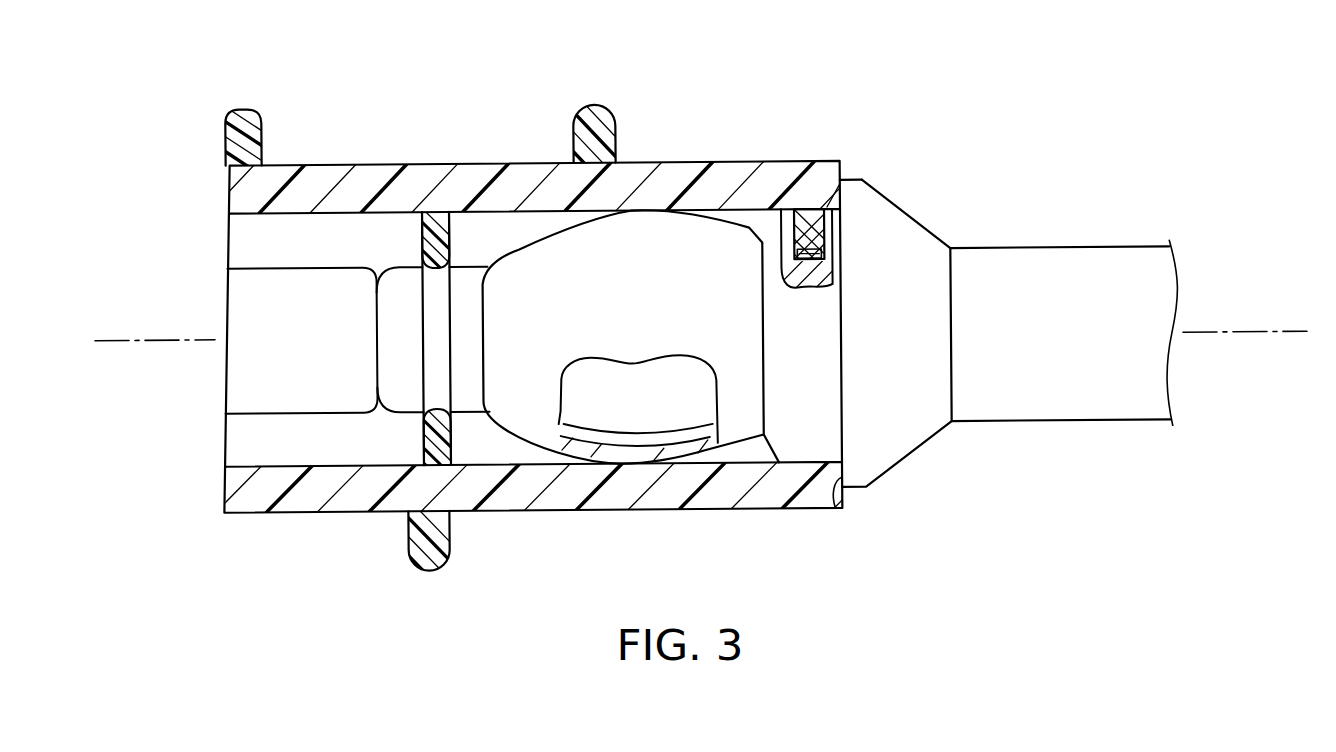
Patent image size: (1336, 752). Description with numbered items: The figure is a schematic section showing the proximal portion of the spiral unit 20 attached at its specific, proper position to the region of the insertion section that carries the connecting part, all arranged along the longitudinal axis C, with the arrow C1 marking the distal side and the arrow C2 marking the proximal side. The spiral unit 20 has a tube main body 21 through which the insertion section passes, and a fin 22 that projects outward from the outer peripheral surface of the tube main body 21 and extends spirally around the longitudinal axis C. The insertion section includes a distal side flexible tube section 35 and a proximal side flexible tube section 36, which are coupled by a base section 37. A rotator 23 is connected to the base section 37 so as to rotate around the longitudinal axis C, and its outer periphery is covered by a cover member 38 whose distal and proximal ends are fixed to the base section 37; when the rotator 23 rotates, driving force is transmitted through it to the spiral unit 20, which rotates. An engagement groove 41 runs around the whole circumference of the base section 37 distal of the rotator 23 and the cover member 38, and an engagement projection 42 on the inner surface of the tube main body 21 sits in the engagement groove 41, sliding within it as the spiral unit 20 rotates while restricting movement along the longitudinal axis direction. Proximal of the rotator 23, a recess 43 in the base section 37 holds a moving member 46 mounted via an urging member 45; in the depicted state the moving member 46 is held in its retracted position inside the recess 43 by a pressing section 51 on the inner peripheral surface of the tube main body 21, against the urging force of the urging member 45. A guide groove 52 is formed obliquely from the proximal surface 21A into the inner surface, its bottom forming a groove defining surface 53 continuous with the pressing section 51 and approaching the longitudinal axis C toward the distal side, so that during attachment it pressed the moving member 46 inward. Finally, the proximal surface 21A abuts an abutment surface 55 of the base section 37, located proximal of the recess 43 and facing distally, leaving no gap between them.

The spiral unit 20 is at (372, 151).
The tube main body 21 is at (322, 175).
The proximal surface 21A is at (845, 173).
The fin 22 is at (243, 106).
The rotator 23 is at (626, 420).
The distal side flexible tube section 35 is at (307, 395).
The proximal side flexible tube section 36 is at (1060, 413).
The base section 37 is at (468, 386).
The cover member 38 is at (665, 445).
The engagement groove 41 is at (440, 391).
The engagement projection 42 is at (440, 215).
The recess 43 is at (800, 258).
The urging member 45 is at (790, 254).
The moving member 46 is at (815, 231).
The pressing section 51 is at (808, 234).
The guide groove 52 is at (833, 201).
The groove defining surface 53 is at (843, 186).
The abutment surface 55 is at (838, 491).
The longitudinal axis C is at (1265, 340).
The arrow C1 is at (583, 39).
The arrow C2 is at (742, 40).